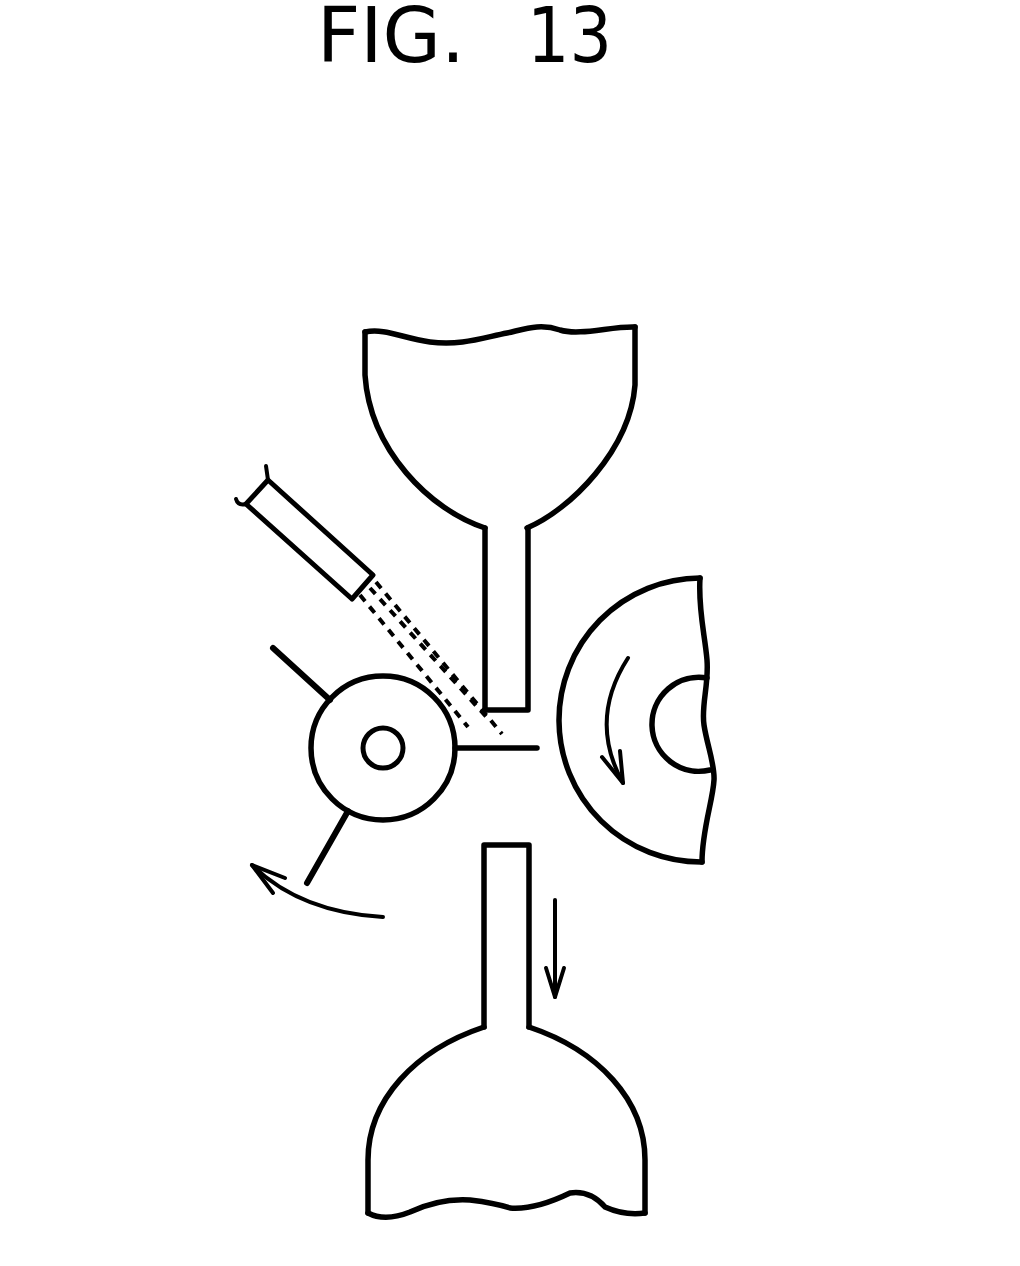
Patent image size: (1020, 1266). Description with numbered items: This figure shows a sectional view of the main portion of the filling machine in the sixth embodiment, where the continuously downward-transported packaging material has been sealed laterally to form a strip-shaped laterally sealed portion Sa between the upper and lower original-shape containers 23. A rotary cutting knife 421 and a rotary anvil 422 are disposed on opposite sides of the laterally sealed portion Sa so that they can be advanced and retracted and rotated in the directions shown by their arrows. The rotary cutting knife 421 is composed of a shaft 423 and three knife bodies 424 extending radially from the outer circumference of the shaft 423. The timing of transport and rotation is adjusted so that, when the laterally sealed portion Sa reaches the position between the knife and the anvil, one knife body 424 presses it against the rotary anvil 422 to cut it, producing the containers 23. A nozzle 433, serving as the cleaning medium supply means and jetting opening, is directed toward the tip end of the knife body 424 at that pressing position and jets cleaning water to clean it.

The original-shape container 23 is at (365, 378).
The nozzle 433 is at (268, 528).
The knife body 424 is at (290, 664).
The shaft 423 is at (310, 750).
The rotary cutting knife 421 is at (267, 813).
The rotary anvil 422 is at (674, 866).
The laterally sealed portion Sa is at (483, 893).